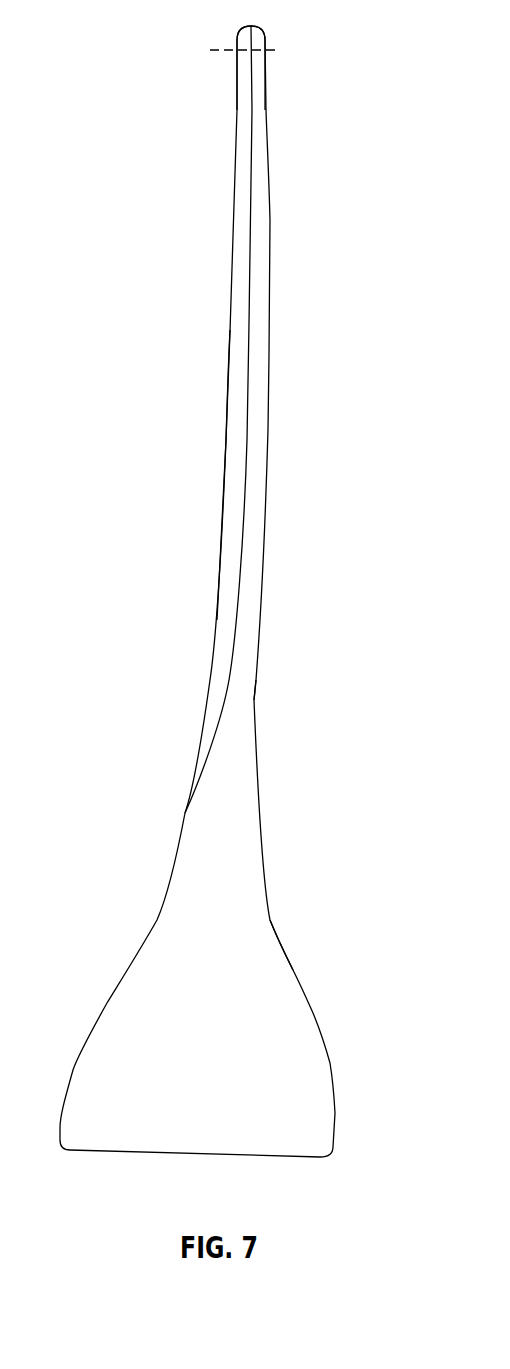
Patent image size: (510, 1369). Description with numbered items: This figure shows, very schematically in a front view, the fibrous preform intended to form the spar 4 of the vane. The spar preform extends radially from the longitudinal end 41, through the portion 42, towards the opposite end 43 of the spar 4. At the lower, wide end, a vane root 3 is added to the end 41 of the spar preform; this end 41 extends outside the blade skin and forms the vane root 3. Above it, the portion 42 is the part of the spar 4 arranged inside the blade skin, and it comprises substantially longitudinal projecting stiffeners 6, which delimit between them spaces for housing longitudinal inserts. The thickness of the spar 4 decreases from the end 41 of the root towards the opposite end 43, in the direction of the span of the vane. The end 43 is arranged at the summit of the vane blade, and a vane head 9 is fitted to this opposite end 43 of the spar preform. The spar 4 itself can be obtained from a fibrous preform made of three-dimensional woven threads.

The vane root 3 is at (297, 1132).
The spar 4 is at (238, 647).
The projecting stiffeners 6 is at (236, 498).
The vane head 9 is at (276, 46).
The longitudinal end 41 is at (275, 1010).
The portion 42 is at (223, 837).
The opposite end 43 is at (265, 88).